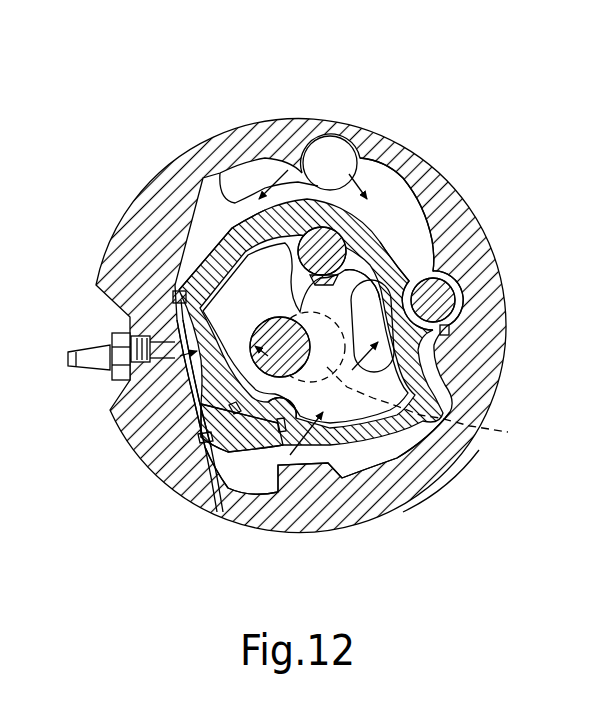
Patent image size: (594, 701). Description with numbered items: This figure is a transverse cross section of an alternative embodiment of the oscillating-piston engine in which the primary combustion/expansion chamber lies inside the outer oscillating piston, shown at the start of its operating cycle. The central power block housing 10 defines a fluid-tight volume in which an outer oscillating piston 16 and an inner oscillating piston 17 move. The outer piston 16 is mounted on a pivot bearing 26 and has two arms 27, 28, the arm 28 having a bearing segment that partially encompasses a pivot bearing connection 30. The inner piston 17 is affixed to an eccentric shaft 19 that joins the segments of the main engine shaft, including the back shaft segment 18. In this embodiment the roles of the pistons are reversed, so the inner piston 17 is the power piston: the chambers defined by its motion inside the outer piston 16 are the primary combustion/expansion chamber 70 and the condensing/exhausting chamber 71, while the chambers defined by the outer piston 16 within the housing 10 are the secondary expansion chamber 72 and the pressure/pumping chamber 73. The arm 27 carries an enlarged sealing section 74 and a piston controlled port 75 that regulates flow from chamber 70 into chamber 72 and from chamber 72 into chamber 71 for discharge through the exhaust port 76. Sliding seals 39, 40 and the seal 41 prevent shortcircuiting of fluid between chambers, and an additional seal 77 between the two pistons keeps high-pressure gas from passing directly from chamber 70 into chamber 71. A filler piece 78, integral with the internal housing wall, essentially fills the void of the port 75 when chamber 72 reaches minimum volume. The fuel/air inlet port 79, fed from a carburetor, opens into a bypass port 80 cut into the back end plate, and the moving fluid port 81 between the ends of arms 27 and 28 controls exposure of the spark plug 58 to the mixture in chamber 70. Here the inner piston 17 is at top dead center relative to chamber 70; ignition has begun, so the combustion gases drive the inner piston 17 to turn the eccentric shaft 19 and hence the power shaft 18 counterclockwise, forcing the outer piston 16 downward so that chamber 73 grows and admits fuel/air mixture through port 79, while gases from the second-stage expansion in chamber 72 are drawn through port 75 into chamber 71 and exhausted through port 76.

The central power block housing 10 is at (165, 188).
The outer oscillating piston 16 is at (221, 227).
The inner oscillating piston 17 is at (175, 360).
The back shaft segment 18 is at (431, 406).
The eccentric shaft 19 is at (353, 283).
The pivot bearing 26 is at (455, 284).
The arm 27 is at (366, 466).
The arm 28 is at (206, 254).
The pivot bearing connection 30 is at (297, 313).
The sliding seal 39 is at (173, 297).
The sliding seal 40 is at (200, 437).
The seal 41 is at (445, 332).
The spark plug 58 is at (93, 350).
The primary combustion/expansion chamber 70 is at (193, 390).
The condensing/exhausting chamber 71 is at (371, 300).
The secondary expansion chamber 72 is at (366, 462).
The pressure/pumping chamber 73 is at (366, 171).
The enlarged sealing section 74 is at (238, 437).
The piston controlled port 75 is at (270, 444).
The exhaust port 76 is at (437, 298).
The seal 77 is at (205, 465).
The filler piece 78 is at (310, 478).
The fuel/air inlet port 79 is at (328, 155).
The bypass port 80 is at (258, 172).
The moving fluid port 81 is at (197, 417).